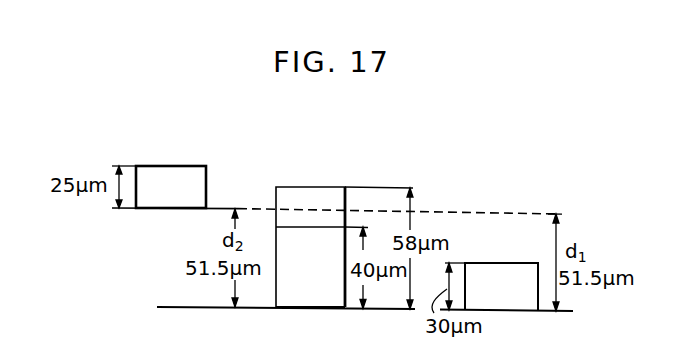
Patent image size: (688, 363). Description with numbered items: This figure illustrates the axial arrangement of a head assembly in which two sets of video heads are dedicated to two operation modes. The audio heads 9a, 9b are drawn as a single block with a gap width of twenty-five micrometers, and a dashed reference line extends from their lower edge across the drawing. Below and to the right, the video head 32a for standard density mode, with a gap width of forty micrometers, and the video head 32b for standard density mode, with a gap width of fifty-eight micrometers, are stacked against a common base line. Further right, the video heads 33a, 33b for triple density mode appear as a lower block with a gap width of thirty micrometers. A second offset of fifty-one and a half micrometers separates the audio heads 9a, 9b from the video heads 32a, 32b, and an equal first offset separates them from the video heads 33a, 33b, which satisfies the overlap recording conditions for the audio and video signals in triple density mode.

The audio head 9a is at (171, 165).
The audio head 9b is at (171, 166).
The video head for standard density mode 32a is at (306, 310).
The video head for standard density mode 32b is at (312, 187).
The video head for triple density mode 33a is at (502, 265).
The video head for triple density mode 33b is at (497, 263).